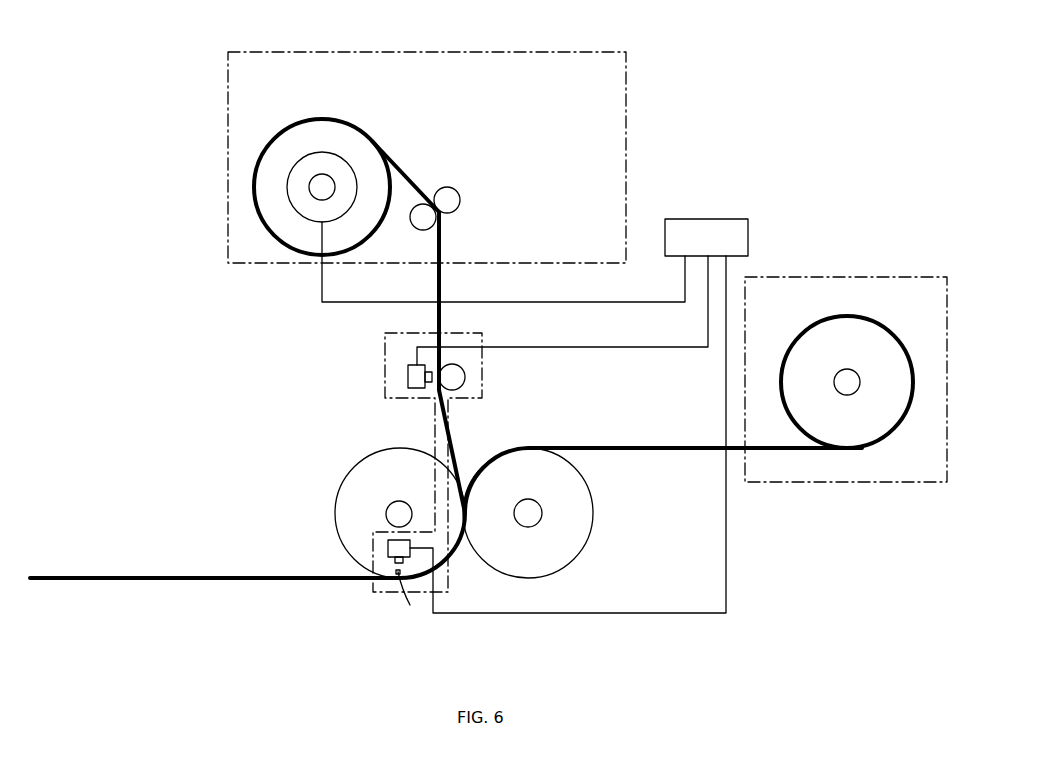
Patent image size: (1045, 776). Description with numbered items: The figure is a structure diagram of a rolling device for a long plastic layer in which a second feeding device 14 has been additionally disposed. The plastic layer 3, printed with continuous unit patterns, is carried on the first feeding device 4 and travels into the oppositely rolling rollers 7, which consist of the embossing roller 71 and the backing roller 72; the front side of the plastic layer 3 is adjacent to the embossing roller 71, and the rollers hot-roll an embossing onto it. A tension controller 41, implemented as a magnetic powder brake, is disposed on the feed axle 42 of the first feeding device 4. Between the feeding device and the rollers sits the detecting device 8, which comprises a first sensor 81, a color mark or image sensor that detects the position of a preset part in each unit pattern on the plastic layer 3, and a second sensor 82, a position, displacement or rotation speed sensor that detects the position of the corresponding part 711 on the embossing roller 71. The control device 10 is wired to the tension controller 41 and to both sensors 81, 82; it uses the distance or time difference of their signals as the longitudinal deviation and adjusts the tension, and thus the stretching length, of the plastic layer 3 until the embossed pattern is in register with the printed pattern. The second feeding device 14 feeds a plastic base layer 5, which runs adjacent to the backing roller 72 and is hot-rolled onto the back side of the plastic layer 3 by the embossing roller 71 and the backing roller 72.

The plastic layer 3 is at (412, 180).
The first feeding device 4 is at (243, 98).
The tension controller 41 is at (256, 190).
The feed axle 42 is at (325, 174).
The plastic base layer 5 is at (665, 450).
The oppositely rolling rollers 7 is at (480, 586).
The embossing roller 71 is at (350, 490).
The corresponding part 711 is at (415, 605).
The backing roller 72 is at (572, 545).
The detecting device 8 is at (384, 375).
The first sensor 81 is at (408, 365).
The second sensor 82 is at (388, 548).
The control device 10 is at (713, 240).
The second feeding device 14 is at (908, 285).